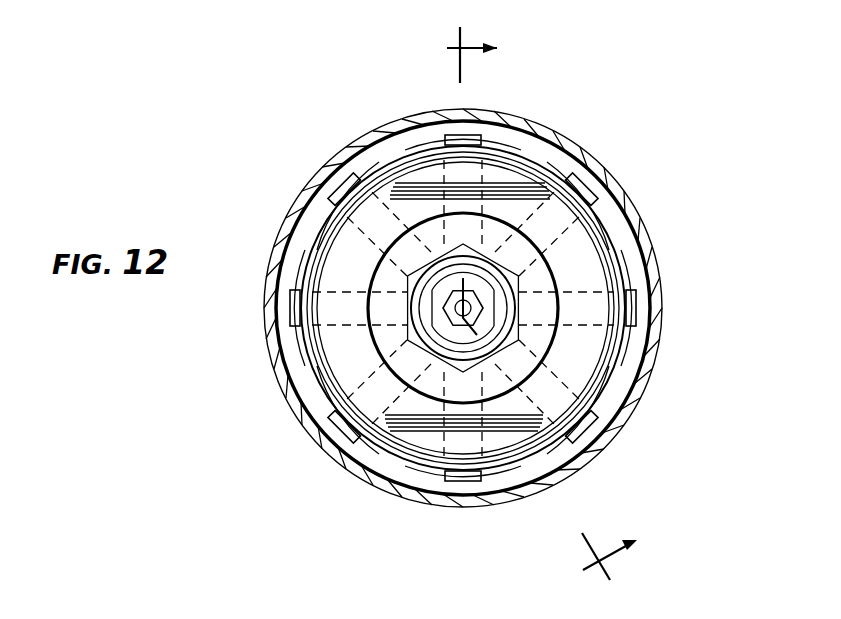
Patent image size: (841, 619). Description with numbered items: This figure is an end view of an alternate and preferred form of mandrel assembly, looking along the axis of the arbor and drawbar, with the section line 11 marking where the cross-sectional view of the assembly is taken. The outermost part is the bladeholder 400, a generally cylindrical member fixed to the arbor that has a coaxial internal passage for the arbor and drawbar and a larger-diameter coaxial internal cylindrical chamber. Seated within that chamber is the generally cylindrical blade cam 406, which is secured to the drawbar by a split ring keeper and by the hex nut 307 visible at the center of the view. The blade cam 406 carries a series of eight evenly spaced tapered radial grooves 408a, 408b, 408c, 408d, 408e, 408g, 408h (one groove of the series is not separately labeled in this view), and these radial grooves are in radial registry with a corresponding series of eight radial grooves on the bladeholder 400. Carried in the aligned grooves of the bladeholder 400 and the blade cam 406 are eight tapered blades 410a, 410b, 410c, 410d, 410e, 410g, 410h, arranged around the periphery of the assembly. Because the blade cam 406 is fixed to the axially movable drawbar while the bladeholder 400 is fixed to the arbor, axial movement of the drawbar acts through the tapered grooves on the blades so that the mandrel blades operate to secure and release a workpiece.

The section line 11- 11 is at (565, 303).
The hex nut 307 is at (518, 338).
The bladeholder 400 is at (408, 147).
The blade cam 406 is at (433, 390).
The tapered radial groove 408a is at (533, 150).
The tapered radial groove 408b is at (605, 250).
The tapered radial groove 408c is at (648, 315).
The tapered radial groove 408d is at (592, 425).
The tapered radial groove 408e is at (414, 512).
The tapered radial groove 408g is at (276, 383).
The tapered radial groove 408h is at (283, 206).
The tapered blade 410a is at (470, 133).
The tapered blade 410b is at (592, 192).
The tapered blade 410c is at (640, 325).
The tapered blade 410d is at (585, 442).
The tapered blade 410e is at (467, 483).
The tapered blade 410g is at (290, 322).
The tapered blade 410h is at (335, 190).